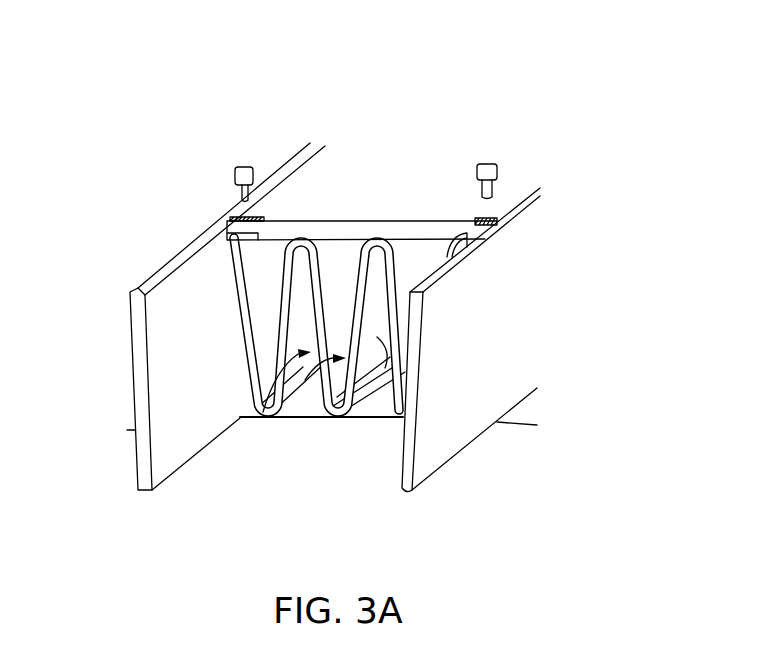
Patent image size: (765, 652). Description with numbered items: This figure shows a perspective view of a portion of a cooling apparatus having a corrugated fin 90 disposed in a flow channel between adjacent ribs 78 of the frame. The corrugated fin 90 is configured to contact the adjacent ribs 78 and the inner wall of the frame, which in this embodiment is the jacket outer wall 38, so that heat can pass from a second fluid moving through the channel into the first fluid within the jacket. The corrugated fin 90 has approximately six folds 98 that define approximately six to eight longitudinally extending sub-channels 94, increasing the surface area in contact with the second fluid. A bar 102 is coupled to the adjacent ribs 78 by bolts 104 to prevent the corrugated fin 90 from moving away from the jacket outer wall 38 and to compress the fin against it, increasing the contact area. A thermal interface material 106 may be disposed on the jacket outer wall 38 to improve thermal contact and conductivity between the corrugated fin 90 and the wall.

The jacket outer wall 38 is at (503, 461).
The ribs 78 is at (165, 328).
The corrugated fin 90 is at (337, 418).
The sub-channels 94 is at (243, 423).
The folds 98 is at (230, 240).
The bar 102 is at (362, 140).
The bolts 104 is at (235, 180).
The thermal interface material 106 is at (387, 403).